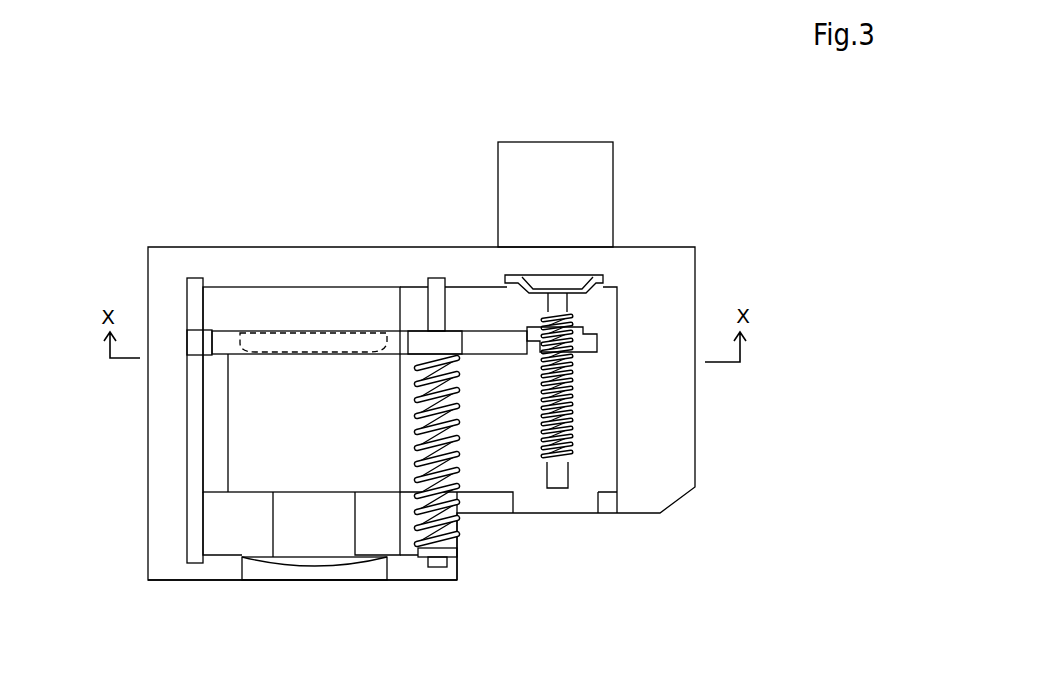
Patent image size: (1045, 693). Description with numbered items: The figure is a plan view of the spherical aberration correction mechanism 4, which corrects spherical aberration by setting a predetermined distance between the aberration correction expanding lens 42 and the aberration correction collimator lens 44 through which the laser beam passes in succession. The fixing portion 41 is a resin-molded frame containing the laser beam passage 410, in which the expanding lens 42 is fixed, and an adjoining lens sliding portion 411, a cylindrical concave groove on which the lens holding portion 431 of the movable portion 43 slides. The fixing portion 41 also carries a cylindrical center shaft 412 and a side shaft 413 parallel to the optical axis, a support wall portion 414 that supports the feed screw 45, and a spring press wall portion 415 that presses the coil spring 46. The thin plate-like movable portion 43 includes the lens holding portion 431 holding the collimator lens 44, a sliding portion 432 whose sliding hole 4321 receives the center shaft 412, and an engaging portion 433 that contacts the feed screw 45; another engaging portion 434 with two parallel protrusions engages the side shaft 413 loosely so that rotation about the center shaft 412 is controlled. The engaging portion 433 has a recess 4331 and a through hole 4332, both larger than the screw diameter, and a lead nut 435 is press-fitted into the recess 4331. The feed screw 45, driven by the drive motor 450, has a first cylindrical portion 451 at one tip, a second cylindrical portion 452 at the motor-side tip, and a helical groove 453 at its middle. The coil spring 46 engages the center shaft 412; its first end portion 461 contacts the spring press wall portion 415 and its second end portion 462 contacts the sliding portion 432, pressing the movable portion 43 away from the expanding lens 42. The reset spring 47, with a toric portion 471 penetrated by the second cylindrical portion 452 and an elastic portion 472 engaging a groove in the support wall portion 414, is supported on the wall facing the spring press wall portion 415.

The spherical aberration correction mechanism 4 is at (143, 220).
The fixing portion 41 is at (678, 258).
The laser beam passage 410 is at (313, 555).
The lens sliding portion 411 is at (235, 405).
The center shaft 412 is at (440, 560).
The side shaft 413 is at (185, 557).
The support wall portion 414 is at (547, 258).
The spring press wall portion 415 is at (455, 566).
The aberration correction expanding lens 42 is at (350, 575).
The movable portion 43 is at (227, 338).
The lens holding portion 431 is at (237, 343).
The sliding portion 432 is at (415, 337).
The sliding hole 4321 is at (423, 328).
The engaging portion 433 is at (598, 347).
The recess 4331 is at (598, 342).
The through hole 4332 is at (580, 353).
The engaging portion 434 is at (197, 345).
The lead nut 435 is at (587, 325).
The aberration correction collimator lens 44 is at (293, 330).
The feed screw 45 is at (567, 462).
The drive motor 450 is at (603, 145).
The first cylindrical portion 451 is at (552, 478).
The second cylindrical portion 452 is at (560, 303).
The helical groove 453 is at (570, 428).
The coil spring 46 is at (428, 497).
The first end portion 461 is at (443, 562).
The second end portion 462 is at (458, 385).
The reset spring 47 is at (537, 290).
The toric portion 471 is at (560, 287).
The elastic portion 472 is at (510, 274).